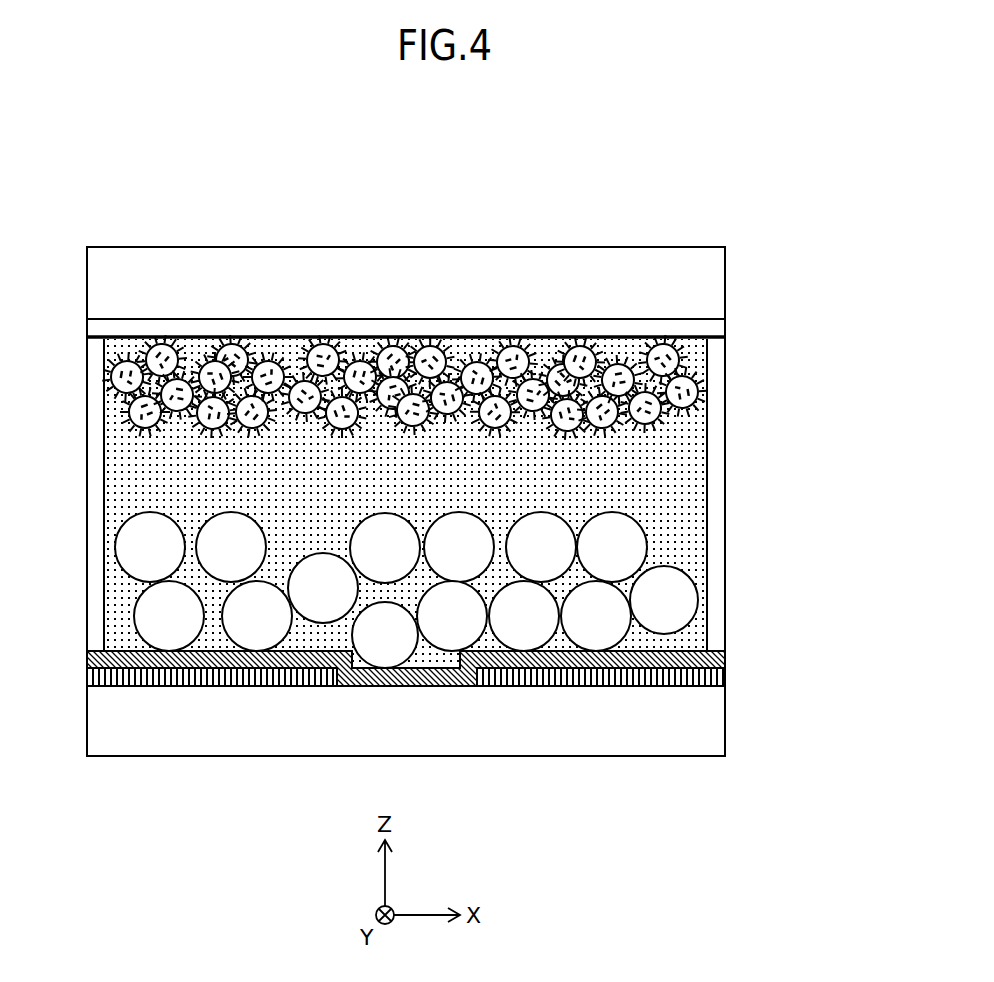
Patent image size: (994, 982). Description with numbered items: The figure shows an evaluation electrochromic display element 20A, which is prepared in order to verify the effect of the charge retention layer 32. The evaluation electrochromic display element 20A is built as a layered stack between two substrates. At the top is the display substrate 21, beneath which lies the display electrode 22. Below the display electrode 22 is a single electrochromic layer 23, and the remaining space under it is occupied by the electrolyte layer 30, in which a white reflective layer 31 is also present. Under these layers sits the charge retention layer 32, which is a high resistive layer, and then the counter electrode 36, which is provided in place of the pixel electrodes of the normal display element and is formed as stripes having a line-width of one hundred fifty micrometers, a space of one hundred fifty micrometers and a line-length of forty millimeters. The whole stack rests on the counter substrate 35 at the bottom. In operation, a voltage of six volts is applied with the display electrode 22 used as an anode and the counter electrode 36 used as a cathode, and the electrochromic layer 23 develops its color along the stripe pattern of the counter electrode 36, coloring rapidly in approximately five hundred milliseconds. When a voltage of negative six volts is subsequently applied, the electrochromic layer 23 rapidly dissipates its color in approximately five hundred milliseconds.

The evaluation electrochromic display element 20A is at (468, 222).
The display substrate 21 is at (718, 285).
The display electrode 22 is at (712, 327).
The electrochromic layer 23 is at (684, 356).
The electrolyte layer 30 is at (697, 490).
The white reflective layer 31 is at (694, 596).
The charge retention layer 32 is at (725, 656).
The counter substrate 35 is at (713, 722).
The counter electrode 36 is at (720, 677).